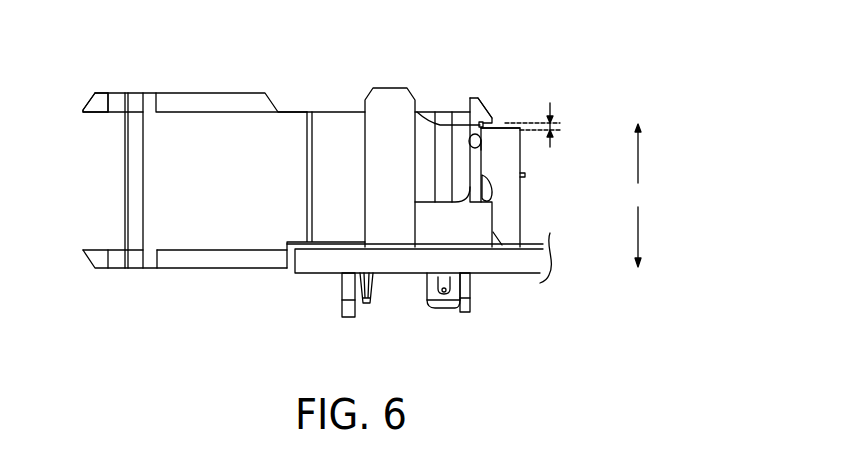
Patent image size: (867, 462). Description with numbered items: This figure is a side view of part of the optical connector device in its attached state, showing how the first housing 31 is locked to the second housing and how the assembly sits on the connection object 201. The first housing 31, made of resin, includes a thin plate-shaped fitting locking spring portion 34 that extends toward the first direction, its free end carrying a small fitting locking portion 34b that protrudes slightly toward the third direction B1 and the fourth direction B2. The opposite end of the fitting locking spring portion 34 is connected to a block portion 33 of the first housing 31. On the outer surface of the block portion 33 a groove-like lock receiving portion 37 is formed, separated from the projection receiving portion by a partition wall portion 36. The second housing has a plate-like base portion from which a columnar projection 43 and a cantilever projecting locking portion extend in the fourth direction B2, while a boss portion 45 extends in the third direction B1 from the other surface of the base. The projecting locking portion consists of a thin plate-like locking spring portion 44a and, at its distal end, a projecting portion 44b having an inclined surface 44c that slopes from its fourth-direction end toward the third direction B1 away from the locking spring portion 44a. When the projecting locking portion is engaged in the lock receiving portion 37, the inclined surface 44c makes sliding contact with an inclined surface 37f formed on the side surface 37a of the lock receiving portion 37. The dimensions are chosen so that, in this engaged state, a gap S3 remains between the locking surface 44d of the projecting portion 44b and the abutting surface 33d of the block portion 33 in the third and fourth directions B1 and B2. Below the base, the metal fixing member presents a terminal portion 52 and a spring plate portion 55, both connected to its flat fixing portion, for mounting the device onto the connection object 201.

The first housing 31 is at (125, 176).
The block portion 33 is at (520, 218).
The abutting surface 33d is at (483, 147).
The fitting locking spring portion 34 is at (205, 230).
The fitting locking portion 34b is at (103, 98).
The partition wall portion 36 is at (435, 112).
The lock receiving portion 37 is at (456, 113).
The side surface 37a is at (523, 123).
The inclined surface 37f is at (493, 198).
The columnar projection 43 is at (390, 108).
The locking spring portion 44a is at (483, 160).
The projecting portion 44b is at (474, 97).
The inclined surface 44c is at (497, 117).
The locking surface 44d is at (447, 123).
The boss portion 45 is at (442, 310).
The terminal portion 52 is at (372, 293).
The spring plate portion 55 is at (340, 307).
The circuit board 201 is at (533, 273).
The gap S3 is at (546, 125).
The third direction B1 is at (638, 243).
The fourth direction B2 is at (638, 160).